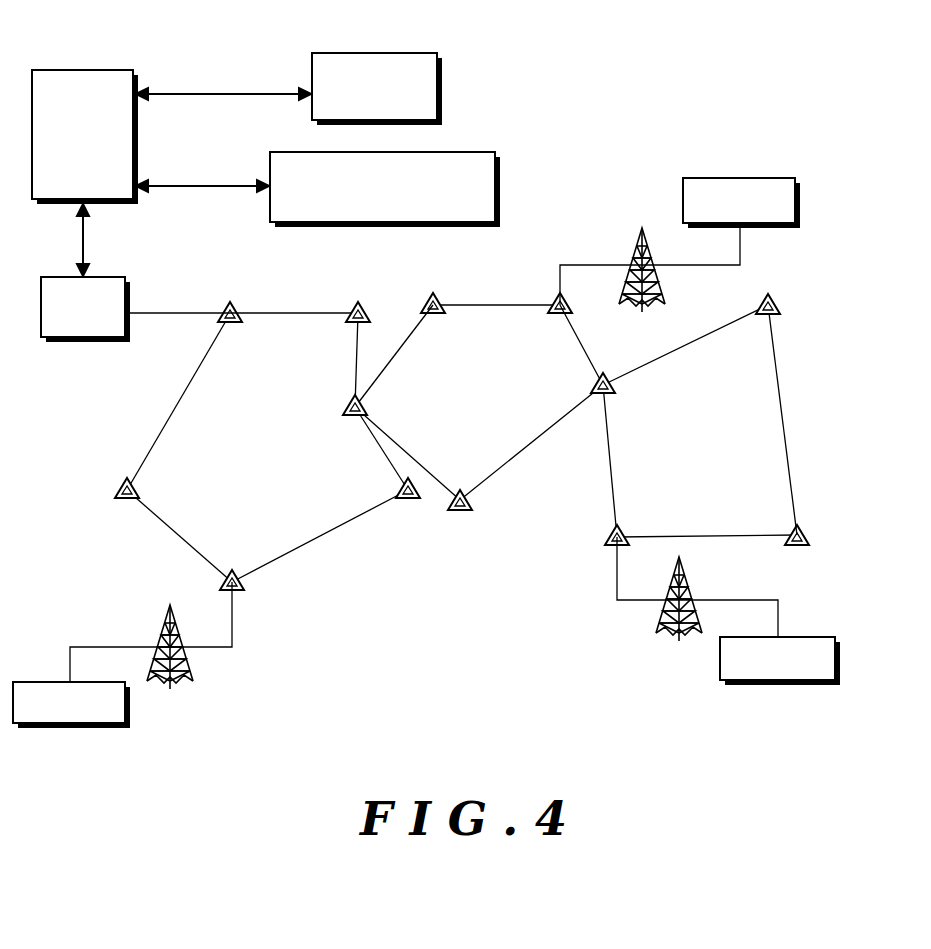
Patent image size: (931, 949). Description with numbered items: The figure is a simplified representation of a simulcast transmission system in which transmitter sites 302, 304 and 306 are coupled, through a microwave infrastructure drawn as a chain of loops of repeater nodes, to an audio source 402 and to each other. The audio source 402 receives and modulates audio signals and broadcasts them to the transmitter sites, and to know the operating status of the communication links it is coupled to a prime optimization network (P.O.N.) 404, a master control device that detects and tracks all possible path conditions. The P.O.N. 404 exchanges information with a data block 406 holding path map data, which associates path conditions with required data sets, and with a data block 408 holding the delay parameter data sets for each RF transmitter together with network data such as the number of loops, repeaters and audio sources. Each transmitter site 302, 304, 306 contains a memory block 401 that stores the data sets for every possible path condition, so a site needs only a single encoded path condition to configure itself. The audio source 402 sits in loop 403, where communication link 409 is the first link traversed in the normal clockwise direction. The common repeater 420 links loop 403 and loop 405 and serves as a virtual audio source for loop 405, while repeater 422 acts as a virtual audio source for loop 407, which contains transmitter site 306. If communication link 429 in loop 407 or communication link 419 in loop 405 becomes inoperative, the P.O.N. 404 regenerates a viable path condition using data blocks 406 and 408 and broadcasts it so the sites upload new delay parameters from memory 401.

The memory block 401 is at (732, 178).
The audio source 402 is at (100, 277).
The loop 403 is at (247, 445).
The prime optimization network (P.O.N.) 404 is at (82, 70).
The loop 405 is at (483, 412).
The data block 406 is at (378, 52).
The loop 407 is at (642, 503).
The data block 408 is at (465, 152).
The communication link 409 is at (287, 313).
The communication link 419 is at (505, 305).
The common repeater 420 is at (360, 405).
The repeater 422 is at (612, 380).
The communication link 429 is at (773, 333).
The transmitter site 302 is at (192, 668).
The transmitter site 304 is at (642, 225).
The transmitter site 306 is at (667, 632).